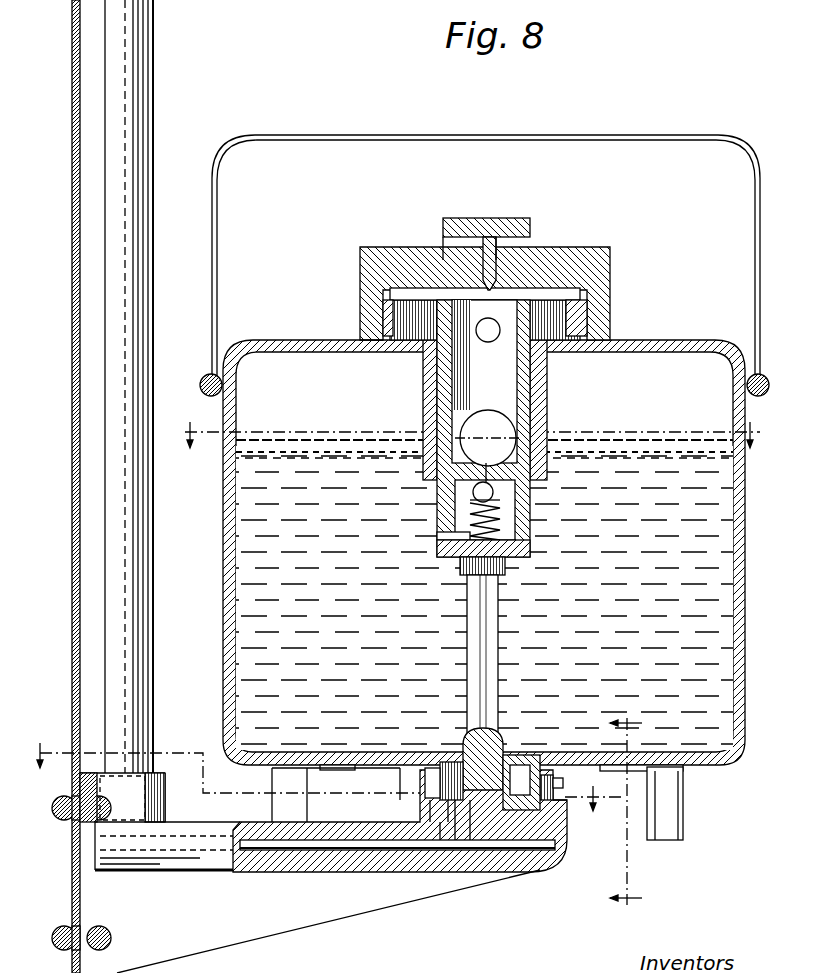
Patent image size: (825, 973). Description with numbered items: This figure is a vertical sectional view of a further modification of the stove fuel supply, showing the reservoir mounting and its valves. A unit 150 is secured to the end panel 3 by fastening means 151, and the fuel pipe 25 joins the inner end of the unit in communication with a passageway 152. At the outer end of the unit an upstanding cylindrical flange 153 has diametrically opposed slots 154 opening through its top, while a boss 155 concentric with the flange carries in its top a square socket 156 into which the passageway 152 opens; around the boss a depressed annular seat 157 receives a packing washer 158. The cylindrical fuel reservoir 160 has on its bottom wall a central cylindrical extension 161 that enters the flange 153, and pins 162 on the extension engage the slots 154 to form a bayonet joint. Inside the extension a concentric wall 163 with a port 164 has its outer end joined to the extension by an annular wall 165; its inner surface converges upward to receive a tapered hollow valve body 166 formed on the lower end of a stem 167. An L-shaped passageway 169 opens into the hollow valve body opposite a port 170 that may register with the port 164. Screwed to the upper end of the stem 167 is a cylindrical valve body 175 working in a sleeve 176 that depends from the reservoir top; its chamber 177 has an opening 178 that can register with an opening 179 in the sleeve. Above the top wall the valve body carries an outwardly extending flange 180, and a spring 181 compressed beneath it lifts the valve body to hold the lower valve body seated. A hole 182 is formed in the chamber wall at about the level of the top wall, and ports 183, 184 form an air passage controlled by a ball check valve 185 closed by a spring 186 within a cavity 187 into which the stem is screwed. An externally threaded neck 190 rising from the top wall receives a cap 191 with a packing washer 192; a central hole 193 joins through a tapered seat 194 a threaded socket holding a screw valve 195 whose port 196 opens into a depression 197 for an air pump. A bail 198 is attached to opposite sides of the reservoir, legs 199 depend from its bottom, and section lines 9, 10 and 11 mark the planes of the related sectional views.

The end panel 3 is at (72, 540).
The fuel pipe 25 is at (150, 572).
The section line 9- 9 is at (468, 435).
The section line 10- 10 is at (320, 777).
The section line 11- 11 is at (626, 809).
The unit 150 is at (335, 925).
The fastening means 151 is at (111, 938).
The passageway 152 is at (290, 850).
The upstanding cylindrical flange 153 is at (562, 826).
The slots 154 is at (558, 802).
The boss 155 is at (480, 845).
The socket 156 is at (456, 840).
The depressed annular seat 157 is at (448, 832).
The washer 158 is at (437, 830).
The fuel tank or reservoir 160 is at (223, 630).
The central cylindrical extension 161 is at (433, 768).
The pins 162 is at (415, 766).
The wall 163 is at (524, 758).
The port 164 is at (450, 762).
The annular wall 165 is at (440, 842).
The hollow valve body 166 is at (520, 757).
The stem 167 is at (467, 637).
The L-shaped passageway 169 is at (560, 850).
The port 170 is at (485, 731).
The cylindrical valve body 175 is at (531, 549).
The sleeve 176 is at (538, 404).
The chamber 177 is at (486, 410).
The opening 178 is at (548, 466).
The opening 179 is at (430, 452).
The outwardly extending flange 180 is at (538, 298).
The spring 181 is at (427, 334).
The hole 182 is at (488, 343).
The port 183 is at (503, 452).
The port 184 is at (437, 537).
The ball check valve 185 is at (510, 506).
The spring 186 is at (477, 520).
The cavity 187 is at (496, 566).
The externally threaded neck 190 is at (600, 317).
The cap 191 is at (600, 247).
The packing washer 192 is at (610, 279).
The central hole 193 is at (455, 297).
The tapered seat 194 is at (497, 283).
The screw valve 195 is at (531, 229).
The port 196 is at (470, 240).
The depression 197 is at (492, 217).
The bail 198 is at (484, 265).
The legs 199 is at (272, 783).